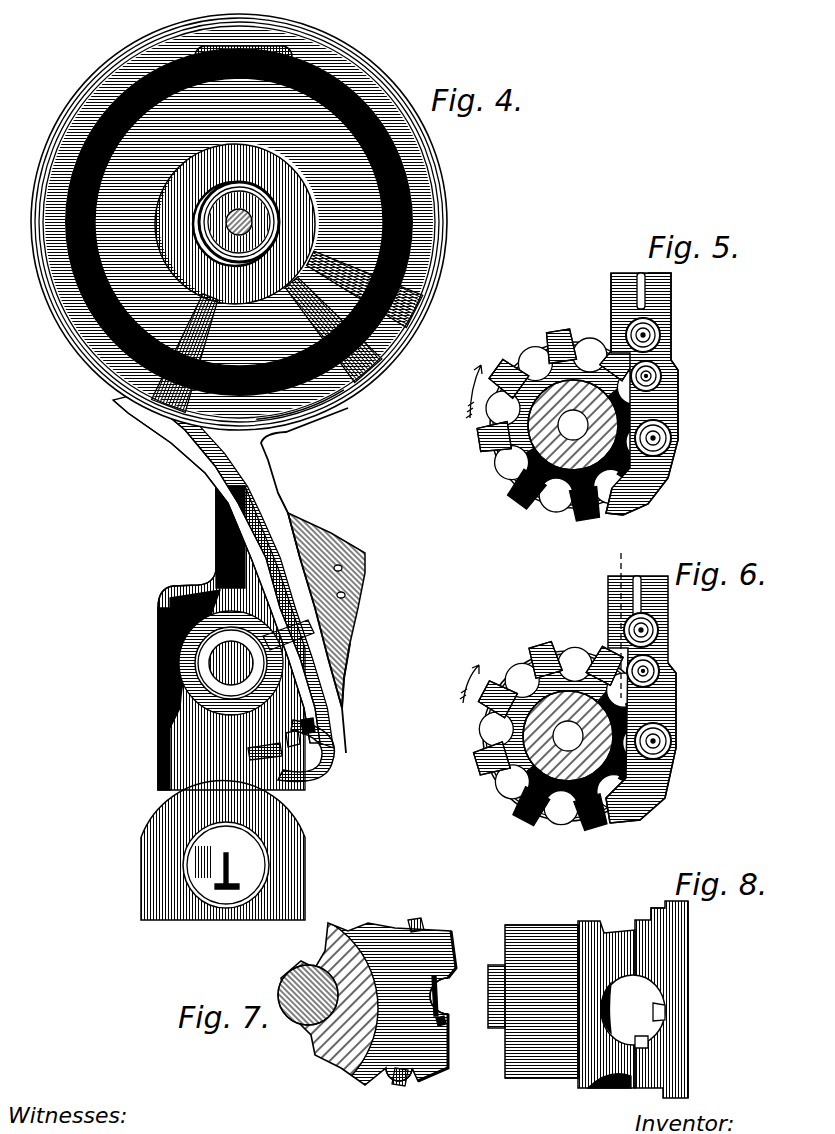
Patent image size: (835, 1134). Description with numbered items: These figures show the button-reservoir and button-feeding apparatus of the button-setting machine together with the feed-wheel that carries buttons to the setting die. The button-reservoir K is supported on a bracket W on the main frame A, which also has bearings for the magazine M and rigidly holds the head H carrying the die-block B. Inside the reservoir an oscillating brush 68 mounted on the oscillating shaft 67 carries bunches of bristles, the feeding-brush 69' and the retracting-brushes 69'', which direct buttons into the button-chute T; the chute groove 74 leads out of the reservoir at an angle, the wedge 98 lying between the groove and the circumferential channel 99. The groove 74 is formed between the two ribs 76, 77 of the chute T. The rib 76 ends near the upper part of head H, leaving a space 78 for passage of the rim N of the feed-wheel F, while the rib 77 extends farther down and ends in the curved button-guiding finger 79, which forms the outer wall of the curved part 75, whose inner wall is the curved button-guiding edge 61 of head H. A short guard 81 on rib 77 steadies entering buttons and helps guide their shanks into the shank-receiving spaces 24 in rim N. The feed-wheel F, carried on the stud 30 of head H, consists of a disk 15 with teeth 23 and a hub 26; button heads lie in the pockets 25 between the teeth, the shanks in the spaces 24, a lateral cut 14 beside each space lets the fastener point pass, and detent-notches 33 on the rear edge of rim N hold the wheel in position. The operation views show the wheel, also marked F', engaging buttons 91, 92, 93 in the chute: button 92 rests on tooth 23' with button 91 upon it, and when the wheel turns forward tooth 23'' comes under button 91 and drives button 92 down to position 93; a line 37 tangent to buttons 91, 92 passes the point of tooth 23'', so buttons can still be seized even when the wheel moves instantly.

In FIG. 4, the button-reservoir K is at (437, 190).
In FIG. 4, the oscillating shaft 67 is at (239, 222).
In FIG. 4, the oscillating brush 68 is at (235, 224).
In FIG. 4, the feeding-brush 69' is at (154, 374).
In FIG. 4, the retracting-brushes 69'' is at (388, 317).
In FIG. 4, the circumferential channel 99 is at (303, 395).
In FIG. 4, the wedge 98 is at (197, 428).
In FIG. 4, the rib 76 is at (210, 455).
In FIG. 5, the rib 76 is at (603, 313).
In FIG. 4, the button-chute T is at (248, 475).
In FIG. 5, the button-chute T is at (638, 386).
In FIG. 6, the button-chute T is at (632, 692).
In FIG. 4, the groove 74 is at (280, 520).
In FIG. 5, the groove 74 is at (633, 285).
In FIG. 6, the groove 74 is at (631, 572).
In FIG. 4, the rib 77 is at (320, 525).
In FIG. 5, the rib 77 is at (662, 292).
In FIG. 4, the bracket W is at (208, 528).
In FIG. 4, the space 78 is at (257, 630).
In FIG. 4, the guard 81 is at (337, 660).
In FIG. 5, the guard 81 is at (673, 410).
In FIG. 6, the guard 81 is at (663, 708).
In FIG. 4, the curved part 75 is at (297, 730).
In FIG. 5, the curved part 75 is at (632, 497).
In FIG. 6, the curved part 75 is at (633, 793).
In FIG. 4, the die-block B is at (147, 728).
In FIG. 4, the frame of the button-feeding apparatus H is at (265, 741).
In FIG. 4, the curved button-guiding edge 61 is at (287, 732).
In FIG. 4, the button-guiding finger 79 is at (290, 772).
In FIG. 5, the button-guiding finger 79 is at (643, 488).
In FIG. 6, the button-guiding finger 79 is at (653, 777).
In FIG. 4, the frame A is at (157, 815).
In FIG. 4, the magazine M is at (190, 870).
In FIG. 5, the feed-wheel F is at (612, 408).
In FIG. 7, the feed-wheel F is at (304, 996).
In FIG. 8, the feed-wheel F is at (541, 1001).
In FIG. 6, the star wheel F' is at (559, 722).
In FIG. 5, the flange N is at (573, 442).
In FIG. 6, the flange N is at (520, 670).
In FIG. 7, the flange N is at (390, 1073).
In FIG. 8, the flange N is at (673, 970).
In FIG. 5, the teeth 23 is at (612, 425).
In FIG. 6, the teeth 23 is at (568, 738).
In FIG. 7, the teeth 23 is at (449, 999).
In FIG. 8, the teeth 23 is at (609, 1102).
In FIG. 6, the tooth 23' is at (715, 680).
In FIG. 5, the tooth 23'' is at (592, 338).
In FIG. 6, the tooth 23'' is at (592, 648).
In FIG. 5, the pockets 25 is at (573, 425).
In FIG. 6, the pockets 25 is at (567, 736).
In FIG. 7, the pockets 25 is at (373, 1093).
In FIG. 8, the pockets 25 is at (633, 1010).
In FIG. 5, the button 91 is at (667, 328).
In FIG. 6, the button 91 is at (660, 627).
In FIG. 5, the button 92 is at (673, 365).
In FIG. 6, the button 92 is at (667, 658).
In FIG. 5, the button 93 is at (650, 432).
In FIG. 6, the button 93 is at (663, 733).
In FIG. 6, the line 37 is at (624, 613).
In FIG. 7, the shank-receiving spaces 24 is at (430, 987).
In FIG. 8, the shank-receiving spaces 24 is at (652, 910).
In FIG. 7, the lateral cut 14 is at (430, 1013).
In FIG. 8, the lateral cut 14 is at (637, 1033).
In FIG. 7, the stud 30 is at (293, 997).
In FIG. 8, the hub 26 is at (540, 920).
In FIG. 8, the disk 15 is at (580, 913).
In FIG. 8, the detent-notches 33 is at (670, 928).